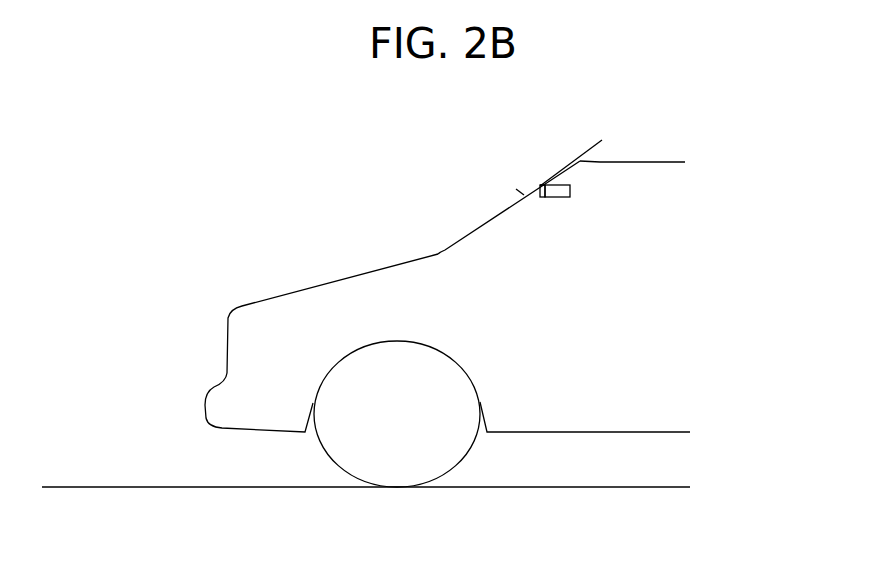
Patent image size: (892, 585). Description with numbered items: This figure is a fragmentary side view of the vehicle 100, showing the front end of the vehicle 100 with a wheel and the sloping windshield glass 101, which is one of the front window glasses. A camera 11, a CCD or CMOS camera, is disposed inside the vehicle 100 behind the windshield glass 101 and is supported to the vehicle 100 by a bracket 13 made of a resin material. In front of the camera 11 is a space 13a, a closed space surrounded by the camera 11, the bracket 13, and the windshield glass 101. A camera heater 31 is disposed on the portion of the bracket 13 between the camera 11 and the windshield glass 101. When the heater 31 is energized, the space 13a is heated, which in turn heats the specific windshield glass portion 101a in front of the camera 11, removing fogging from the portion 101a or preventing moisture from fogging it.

The vehicle 100 is at (142, 347).
The windshield glass 101 is at (492, 218).
The specific windshield glass portion 101a is at (527, 175).
The camera 11 is at (570, 192).
The bracket 13 is at (539, 198).
The space 13a is at (541, 183).
The camera heater 31 is at (580, 156).